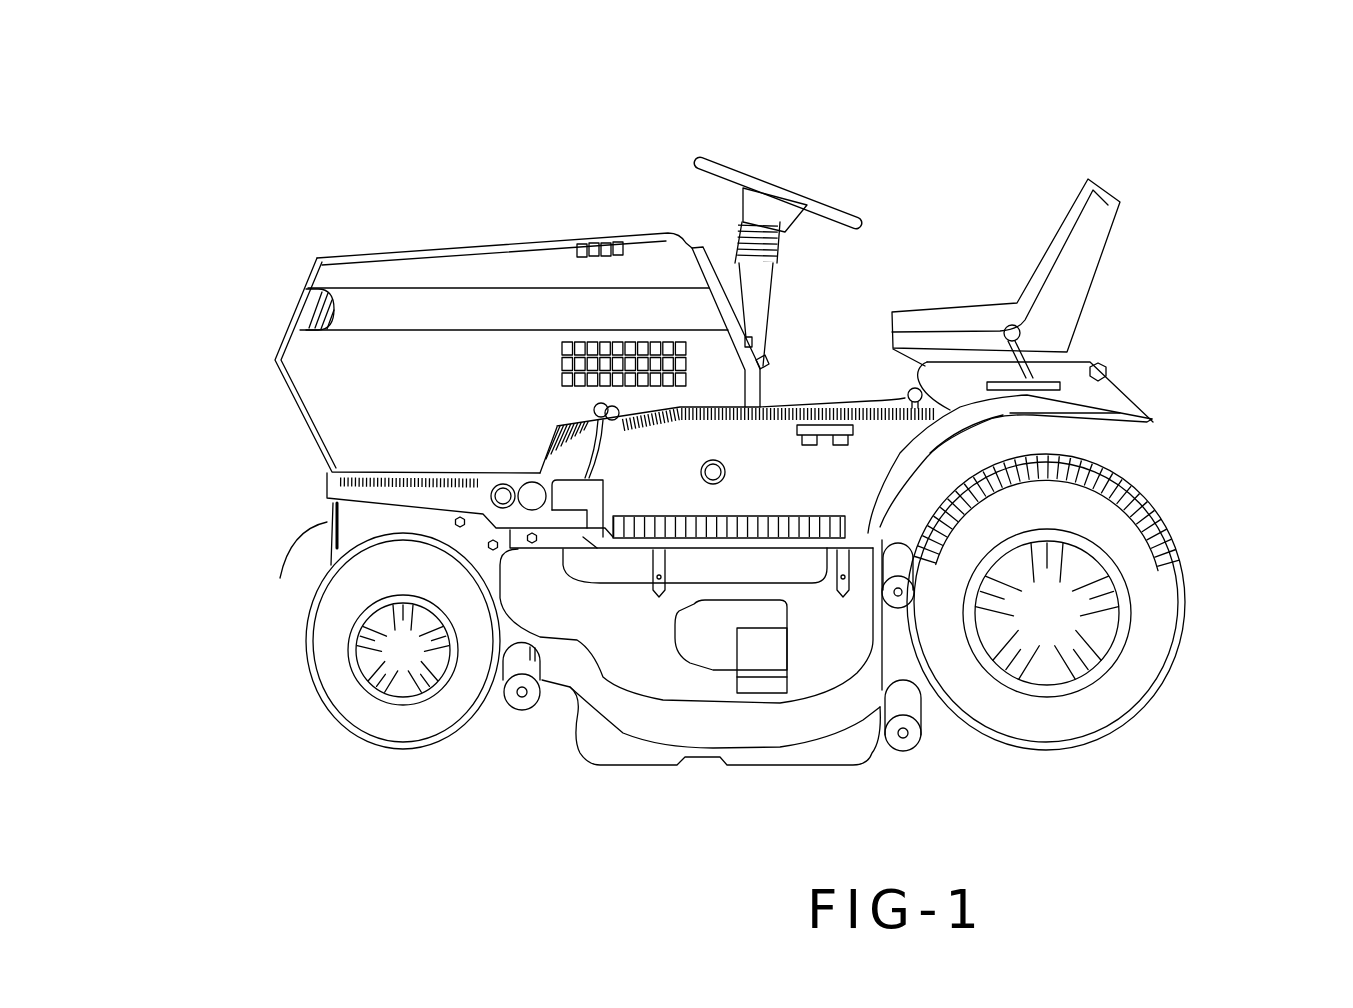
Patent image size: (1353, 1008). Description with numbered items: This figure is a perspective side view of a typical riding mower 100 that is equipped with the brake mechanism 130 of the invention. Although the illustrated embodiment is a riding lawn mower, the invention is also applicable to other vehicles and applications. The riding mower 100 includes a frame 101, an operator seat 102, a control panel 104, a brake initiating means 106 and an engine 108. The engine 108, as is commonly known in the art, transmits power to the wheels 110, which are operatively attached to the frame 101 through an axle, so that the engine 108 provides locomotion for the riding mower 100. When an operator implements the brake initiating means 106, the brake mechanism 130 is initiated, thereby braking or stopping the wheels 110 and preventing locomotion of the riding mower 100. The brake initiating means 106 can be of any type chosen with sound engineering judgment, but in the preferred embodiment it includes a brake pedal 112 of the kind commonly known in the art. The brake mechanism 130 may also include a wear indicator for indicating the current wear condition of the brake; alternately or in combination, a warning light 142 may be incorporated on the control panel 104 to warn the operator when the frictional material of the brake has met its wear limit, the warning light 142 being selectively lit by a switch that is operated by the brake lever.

The riding mower 100 is at (960, 150).
The frame 101 is at (332, 523).
The operator seat 102 is at (1082, 196).
The control panel 104 is at (768, 347).
The brake initiating means 106 is at (548, 355).
The engine 108 is at (275, 337).
The wheels 110 is at (1132, 668).
The brake pedal 112 is at (609, 407).
The brake mechanism 130 is at (1216, 384).
The warning light 142 is at (749, 340).